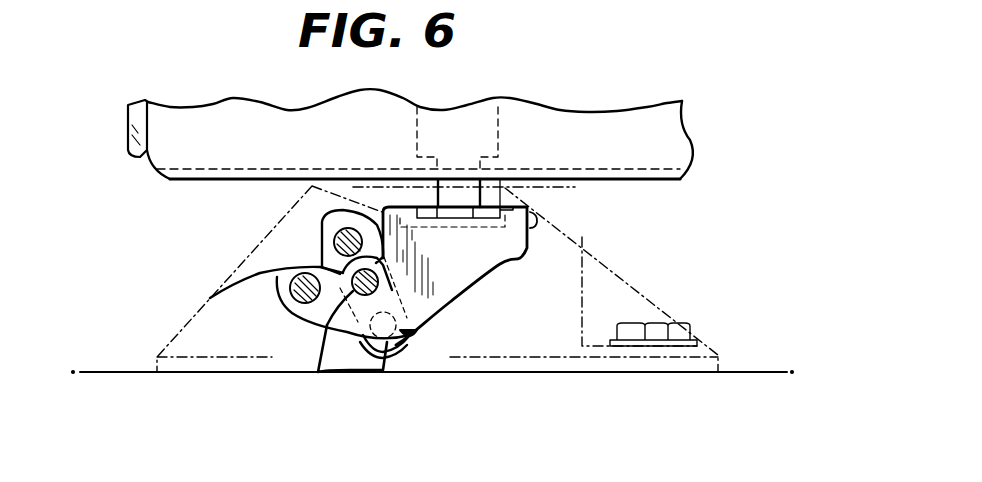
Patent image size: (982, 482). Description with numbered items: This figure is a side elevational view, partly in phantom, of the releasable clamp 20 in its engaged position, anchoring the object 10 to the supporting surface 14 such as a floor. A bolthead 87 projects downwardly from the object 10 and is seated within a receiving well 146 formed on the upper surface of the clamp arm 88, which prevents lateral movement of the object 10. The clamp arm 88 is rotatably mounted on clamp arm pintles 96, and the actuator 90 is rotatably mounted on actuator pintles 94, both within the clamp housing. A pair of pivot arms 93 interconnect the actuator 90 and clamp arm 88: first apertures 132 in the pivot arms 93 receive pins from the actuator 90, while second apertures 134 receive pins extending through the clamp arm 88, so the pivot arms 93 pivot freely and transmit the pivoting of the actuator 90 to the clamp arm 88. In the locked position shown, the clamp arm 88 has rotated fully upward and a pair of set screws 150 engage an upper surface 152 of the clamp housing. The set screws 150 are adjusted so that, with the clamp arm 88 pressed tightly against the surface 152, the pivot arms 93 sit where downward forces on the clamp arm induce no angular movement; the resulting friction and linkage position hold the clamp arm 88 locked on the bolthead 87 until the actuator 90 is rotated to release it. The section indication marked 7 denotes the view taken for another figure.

The object 10 is at (163, 158).
The supporting surface 14 is at (88, 371).
The releasable clamp 20 is at (145, 274).
The section line 7- 7 is at (562, 183).
The bolthead 87 is at (507, 207).
The clamp arm 88 is at (503, 266).
The actuator 90 is at (322, 250).
The pivot arms 93 is at (410, 328).
The actuator pintles 94 is at (335, 240).
The clamp arm pintles 96 is at (210, 298).
The first apertures 132 is at (385, 372).
The second apertures 134 is at (318, 372).
The receiving well 146 is at (307, 181).
The set screws 150 is at (528, 240).
The upper surface 152 is at (540, 228).